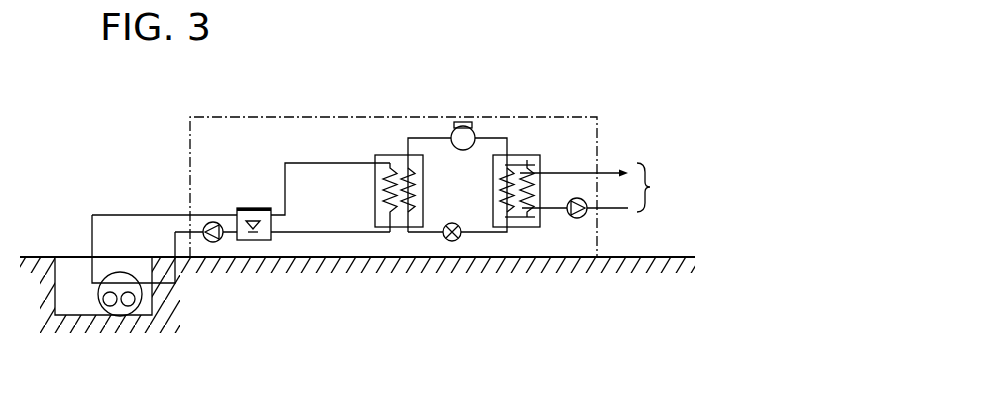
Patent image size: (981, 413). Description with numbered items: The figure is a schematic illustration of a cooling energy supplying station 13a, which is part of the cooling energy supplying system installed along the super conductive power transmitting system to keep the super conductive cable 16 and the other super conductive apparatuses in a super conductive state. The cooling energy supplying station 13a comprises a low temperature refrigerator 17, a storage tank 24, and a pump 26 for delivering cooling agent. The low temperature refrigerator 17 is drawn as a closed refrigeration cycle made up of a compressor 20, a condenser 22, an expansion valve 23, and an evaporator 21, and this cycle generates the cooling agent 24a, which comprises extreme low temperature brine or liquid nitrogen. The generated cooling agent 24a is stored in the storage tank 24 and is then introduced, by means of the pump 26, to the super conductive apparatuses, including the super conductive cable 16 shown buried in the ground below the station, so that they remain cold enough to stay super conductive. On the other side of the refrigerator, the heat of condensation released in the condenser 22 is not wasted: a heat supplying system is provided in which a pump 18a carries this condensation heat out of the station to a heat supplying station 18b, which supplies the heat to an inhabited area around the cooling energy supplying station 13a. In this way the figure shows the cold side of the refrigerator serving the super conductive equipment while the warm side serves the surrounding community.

The cooling energy supplying station 13a is at (577, 115).
The super conductive cable 16 is at (133, 313).
The low temperature refrigerator 17 is at (418, 128).
The pump 18a is at (577, 219).
The heat supplying station 18b is at (727, 187).
The compressor 20 is at (471, 129).
The evaporator 21 is at (423, 163).
The condenser 22 is at (493, 208).
The expansion valve 23 is at (452, 242).
The storage tank 24 is at (253, 208).
The cooling agent 24a is at (177, 268).
The pump 26 is at (213, 222).